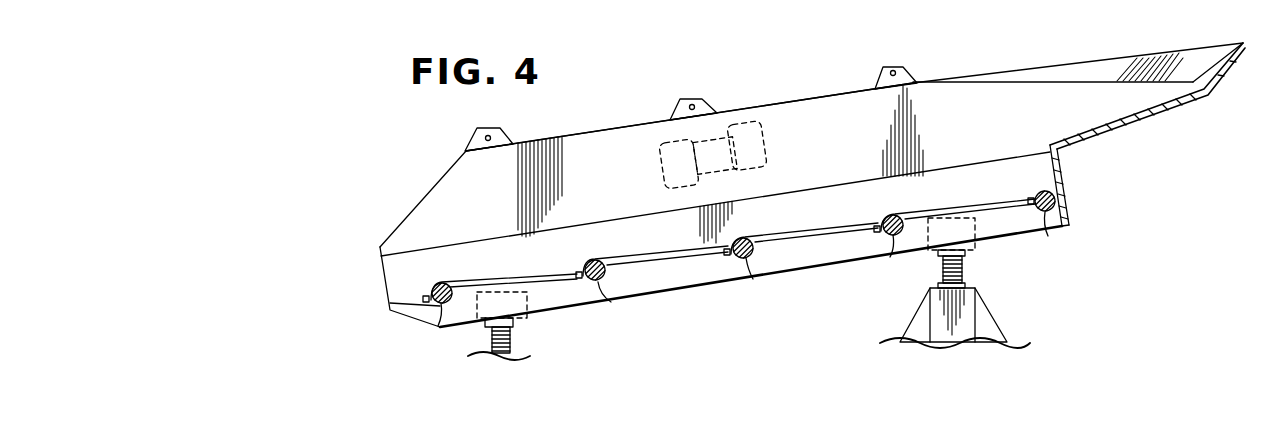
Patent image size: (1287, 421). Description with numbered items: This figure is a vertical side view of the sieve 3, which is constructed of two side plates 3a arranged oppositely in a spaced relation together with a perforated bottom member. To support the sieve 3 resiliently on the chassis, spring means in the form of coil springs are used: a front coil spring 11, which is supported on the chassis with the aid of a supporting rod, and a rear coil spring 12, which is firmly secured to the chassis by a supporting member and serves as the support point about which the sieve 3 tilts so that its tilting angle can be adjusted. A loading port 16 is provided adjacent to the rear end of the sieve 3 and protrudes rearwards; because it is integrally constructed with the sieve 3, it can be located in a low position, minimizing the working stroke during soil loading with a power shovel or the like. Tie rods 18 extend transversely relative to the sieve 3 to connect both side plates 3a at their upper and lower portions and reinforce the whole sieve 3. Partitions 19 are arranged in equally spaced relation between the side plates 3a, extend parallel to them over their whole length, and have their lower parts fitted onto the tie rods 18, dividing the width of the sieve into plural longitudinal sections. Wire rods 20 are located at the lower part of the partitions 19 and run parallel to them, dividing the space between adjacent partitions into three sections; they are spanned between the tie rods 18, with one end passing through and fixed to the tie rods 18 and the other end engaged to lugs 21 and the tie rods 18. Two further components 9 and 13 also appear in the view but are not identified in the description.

The sieve 3 is at (566, 135).
The side plates 3a is at (807, 103).
The vibrator motor (hidden) 9 is at (663, 167).
The front coil spring 11 is at (512, 337).
The rear coil spring 12 is at (964, 267).
The support base 13 is at (984, 316).
The loading port 16 is at (1155, 56).
The tie rods 18 is at (489, 135).
The partitions 19 is at (827, 187).
The wire rods 20 is at (518, 277).
The lugs 21 is at (423, 299).